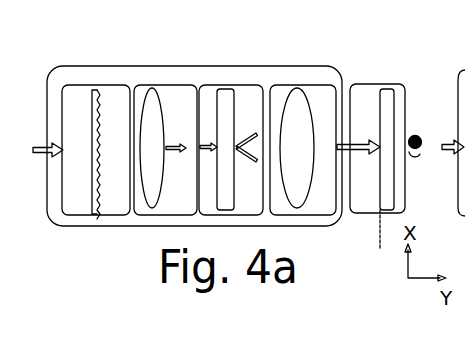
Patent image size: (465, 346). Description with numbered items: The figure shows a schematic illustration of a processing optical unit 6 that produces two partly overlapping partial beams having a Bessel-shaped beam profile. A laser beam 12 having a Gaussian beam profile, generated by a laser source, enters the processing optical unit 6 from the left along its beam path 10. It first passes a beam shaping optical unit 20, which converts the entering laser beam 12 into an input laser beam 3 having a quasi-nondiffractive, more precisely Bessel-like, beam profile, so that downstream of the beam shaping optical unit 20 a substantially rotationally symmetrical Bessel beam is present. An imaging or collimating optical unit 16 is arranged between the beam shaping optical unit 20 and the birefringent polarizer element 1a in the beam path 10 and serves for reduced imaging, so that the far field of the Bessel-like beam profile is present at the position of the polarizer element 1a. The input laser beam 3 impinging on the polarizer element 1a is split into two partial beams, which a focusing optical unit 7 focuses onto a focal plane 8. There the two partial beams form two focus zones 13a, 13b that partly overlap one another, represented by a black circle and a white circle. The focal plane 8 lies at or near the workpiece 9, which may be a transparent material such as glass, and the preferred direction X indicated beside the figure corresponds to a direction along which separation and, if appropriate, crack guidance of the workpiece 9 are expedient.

The birefringent polarizer element 1a is at (237, 89).
The input laser beam 3 is at (209, 143).
The processing optical unit 6 is at (272, 66).
The focusing optical unit 7 is at (320, 85).
The focal plane 8 is at (378, 232).
The workpiece 9 is at (383, 102).
The beam path 10 is at (129, 115).
The laser beam 12 is at (32, 146).
The focus zone 13a is at (415, 135).
The focus zone 13b is at (418, 156).
The imaging or collimating optical unit 16 is at (166, 86).
The beam shaping optical unit 20 is at (97, 90).